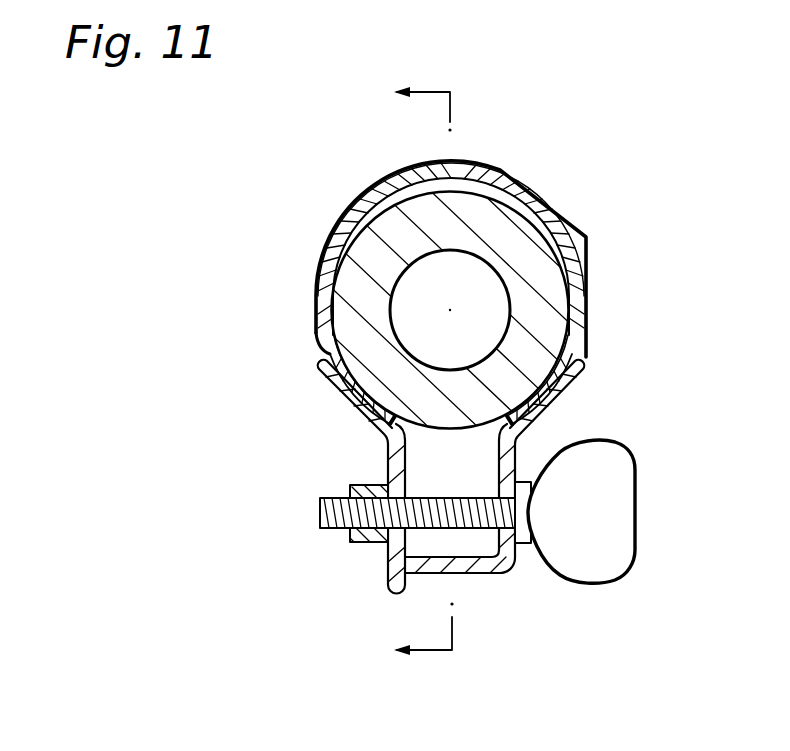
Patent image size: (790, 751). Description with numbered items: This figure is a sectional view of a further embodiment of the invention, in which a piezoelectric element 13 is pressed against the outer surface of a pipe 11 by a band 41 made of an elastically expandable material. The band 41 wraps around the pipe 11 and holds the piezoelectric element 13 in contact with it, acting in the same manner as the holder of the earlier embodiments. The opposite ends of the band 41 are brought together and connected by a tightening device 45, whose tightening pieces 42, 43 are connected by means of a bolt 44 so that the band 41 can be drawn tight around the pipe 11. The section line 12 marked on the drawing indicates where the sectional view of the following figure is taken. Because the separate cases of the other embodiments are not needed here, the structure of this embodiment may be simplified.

The pipe 11 is at (390, 223).
The section line 12— 12 is at (424, 370).
The piezoelectric element 13 is at (523, 205).
The band 41 is at (578, 297).
The tightening piece 42 is at (400, 562).
The tightening piece 43 is at (508, 573).
The bolt 44 is at (610, 497).
The tightening device 45 is at (477, 604).